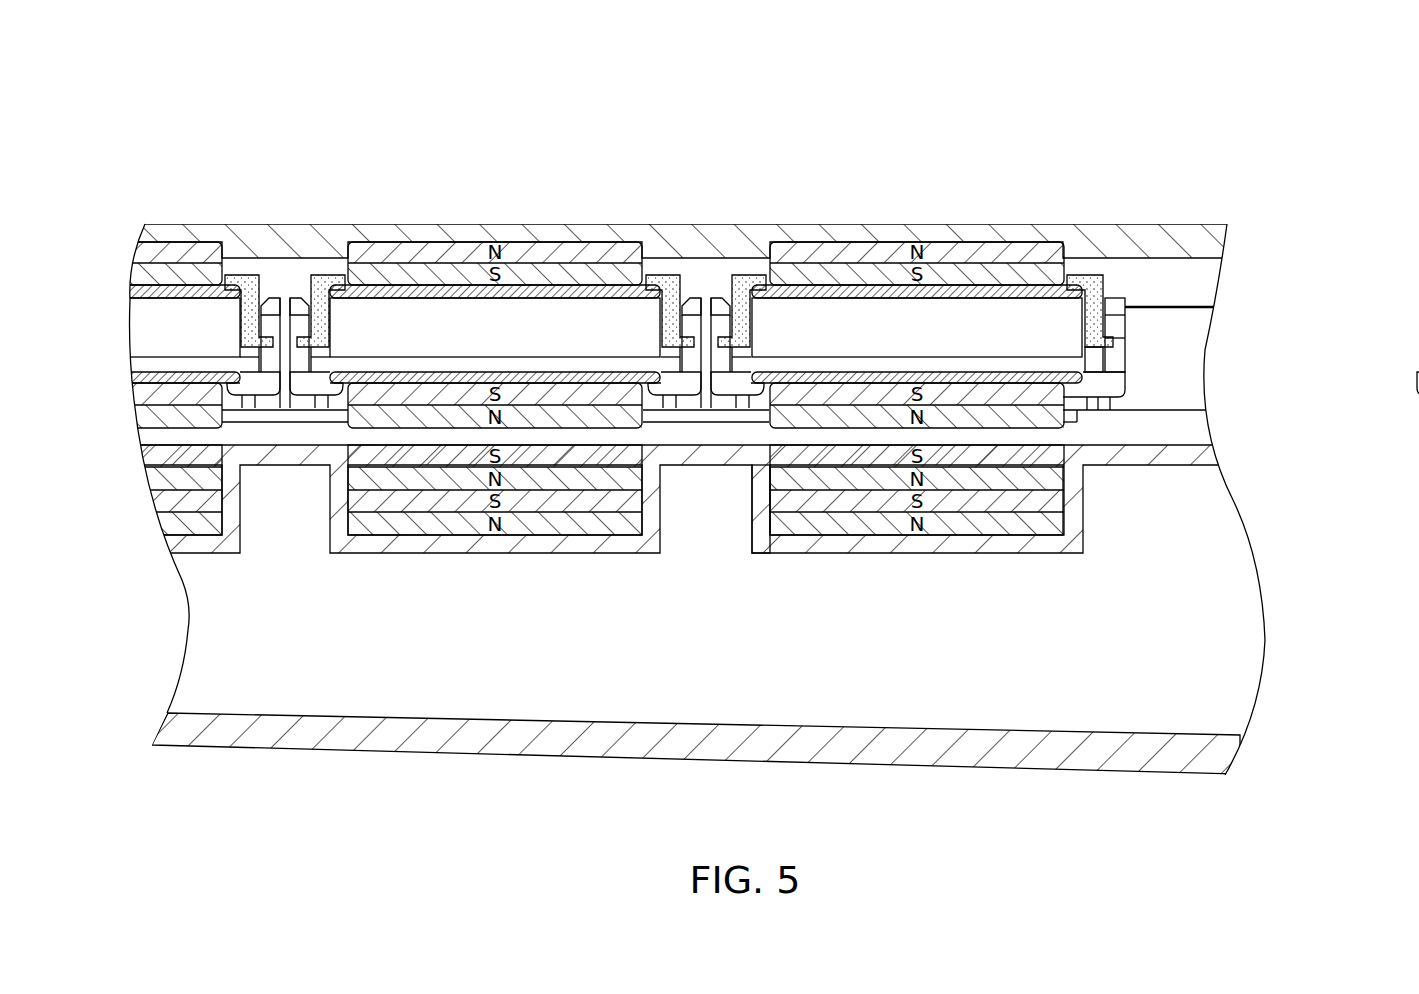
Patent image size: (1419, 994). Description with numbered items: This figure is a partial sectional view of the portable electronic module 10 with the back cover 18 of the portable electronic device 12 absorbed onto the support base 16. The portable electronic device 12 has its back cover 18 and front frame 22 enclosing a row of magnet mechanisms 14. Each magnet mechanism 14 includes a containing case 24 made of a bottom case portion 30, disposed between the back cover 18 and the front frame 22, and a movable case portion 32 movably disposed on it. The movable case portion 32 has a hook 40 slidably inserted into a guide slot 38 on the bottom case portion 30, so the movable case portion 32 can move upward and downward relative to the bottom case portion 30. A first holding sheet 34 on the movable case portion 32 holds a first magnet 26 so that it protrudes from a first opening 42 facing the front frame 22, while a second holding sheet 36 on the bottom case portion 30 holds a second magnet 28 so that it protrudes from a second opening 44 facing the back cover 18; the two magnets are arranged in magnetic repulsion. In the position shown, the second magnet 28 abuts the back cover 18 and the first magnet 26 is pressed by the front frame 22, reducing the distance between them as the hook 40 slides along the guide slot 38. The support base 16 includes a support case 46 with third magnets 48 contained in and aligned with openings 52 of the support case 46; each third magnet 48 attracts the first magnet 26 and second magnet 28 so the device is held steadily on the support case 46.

The portable electronic module 10 is at (1218, 138).
The portable electronic device 12 is at (709, 454).
The magnet mechanism 14 is at (942, 254).
The support base 16 is at (348, 753).
The back cover 18 is at (1203, 426).
The front frame 22 is at (1202, 243).
The containing case 24 is at (1102, 250).
The first magnet 26 is at (908, 242).
The second magnet 28 is at (1027, 395).
The bottom case portion 30 is at (1120, 298).
The movable case portion 32 is at (1077, 273).
The first holding sheet 34 is at (950, 287).
The second holding sheet 36 is at (990, 365).
The guide slot 38 is at (1122, 323).
The hook 40 is at (1113, 340).
The first opening 42 is at (768, 280).
The second opening 44 is at (770, 392).
The support case 46 is at (1188, 455).
The third magnet 48 is at (840, 453).
The opening 52 is at (773, 508).